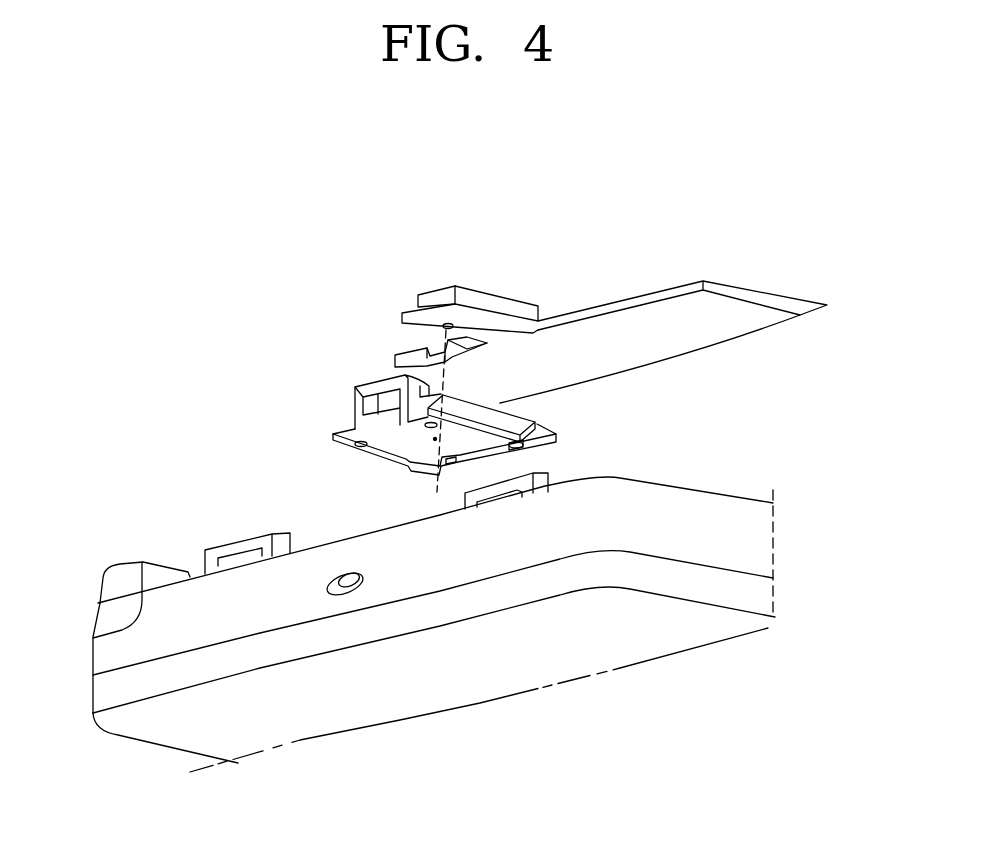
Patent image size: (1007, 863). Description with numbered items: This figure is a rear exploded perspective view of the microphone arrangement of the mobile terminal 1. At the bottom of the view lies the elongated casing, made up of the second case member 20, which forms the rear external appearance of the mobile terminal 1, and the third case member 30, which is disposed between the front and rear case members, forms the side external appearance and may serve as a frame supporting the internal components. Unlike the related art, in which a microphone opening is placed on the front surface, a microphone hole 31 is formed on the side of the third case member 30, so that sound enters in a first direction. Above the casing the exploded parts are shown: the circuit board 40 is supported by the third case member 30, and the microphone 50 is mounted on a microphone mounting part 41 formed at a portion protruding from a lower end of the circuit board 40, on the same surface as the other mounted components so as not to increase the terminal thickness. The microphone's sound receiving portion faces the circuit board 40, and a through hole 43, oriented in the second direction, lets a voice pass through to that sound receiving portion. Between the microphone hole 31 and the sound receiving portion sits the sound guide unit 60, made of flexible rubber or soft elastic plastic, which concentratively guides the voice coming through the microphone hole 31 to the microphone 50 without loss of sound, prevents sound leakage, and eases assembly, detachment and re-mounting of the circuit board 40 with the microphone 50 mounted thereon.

The mobile terminal 1 is at (233, 401).
The second case member 20 is at (745, 585).
The third case member 30 is at (745, 526).
The microphone hole 31 is at (322, 588).
The circuit board 40 is at (605, 307).
The microphone mounting part 41 is at (488, 312).
The through hole 43 is at (443, 325).
The microphone 50 is at (437, 297).
The sound guide unit 60 is at (353, 403).